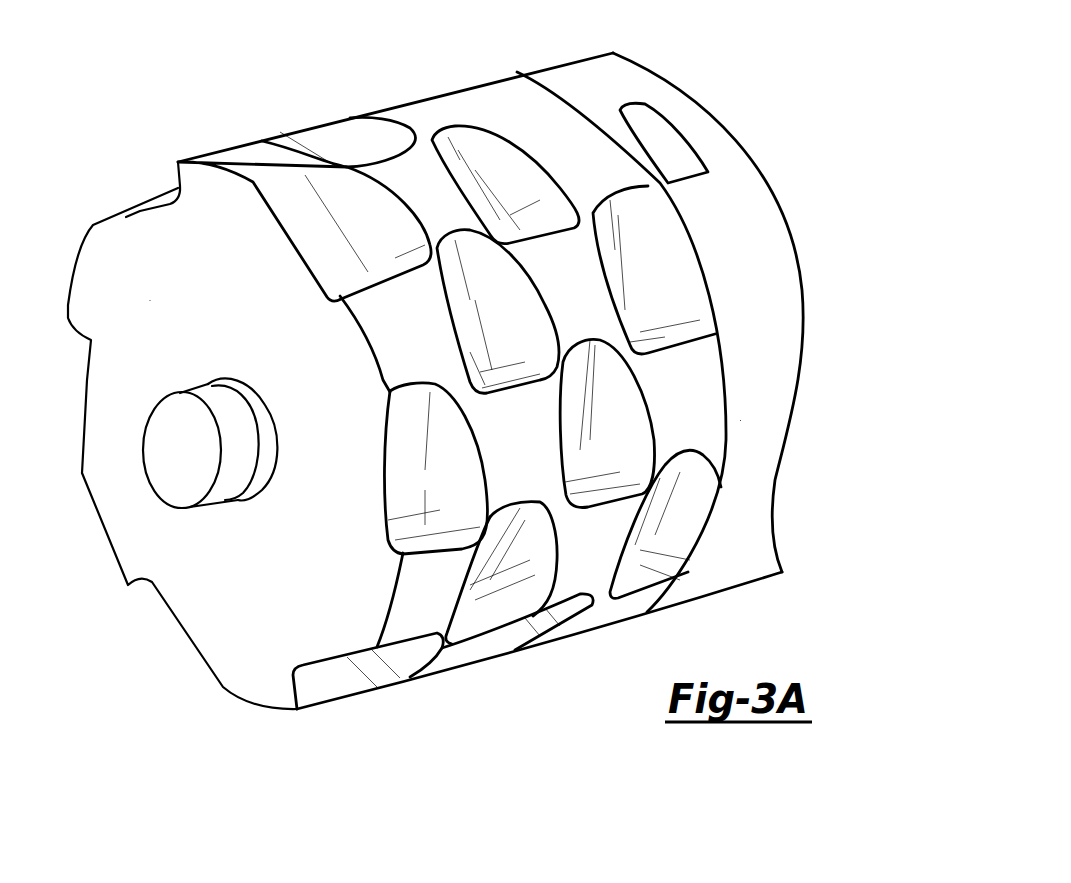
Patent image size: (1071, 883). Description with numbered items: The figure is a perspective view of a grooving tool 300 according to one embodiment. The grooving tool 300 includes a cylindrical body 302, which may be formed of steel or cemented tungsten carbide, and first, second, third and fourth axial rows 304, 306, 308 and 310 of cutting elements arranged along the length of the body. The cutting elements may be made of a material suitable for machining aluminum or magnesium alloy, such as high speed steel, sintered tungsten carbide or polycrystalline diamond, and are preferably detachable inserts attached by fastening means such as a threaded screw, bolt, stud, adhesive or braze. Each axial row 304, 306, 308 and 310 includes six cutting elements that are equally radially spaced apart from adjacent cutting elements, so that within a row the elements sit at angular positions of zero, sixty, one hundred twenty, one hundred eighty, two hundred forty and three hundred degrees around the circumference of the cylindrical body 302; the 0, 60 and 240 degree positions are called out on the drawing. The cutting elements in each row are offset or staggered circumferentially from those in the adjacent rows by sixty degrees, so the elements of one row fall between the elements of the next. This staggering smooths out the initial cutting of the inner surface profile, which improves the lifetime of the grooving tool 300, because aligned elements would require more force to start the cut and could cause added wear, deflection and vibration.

The grooving tool 300 is at (481, 406).
The cylindrical body 302 is at (690, 390).
The first axial row of cutting elements 304 is at (242, 133).
The second axial row of cutting elements 306 is at (317, 107).
The third axial row of cutting elements 308 is at (390, 90).
The fourth axial row of cutting elements 310 is at (463, 63).
The 240 degree cutting element position 240 is at (467, 87).
The 60 degree cutting element position 60 is at (439, 652).
The 0 degree cutting element position 0 is at (643, 587).